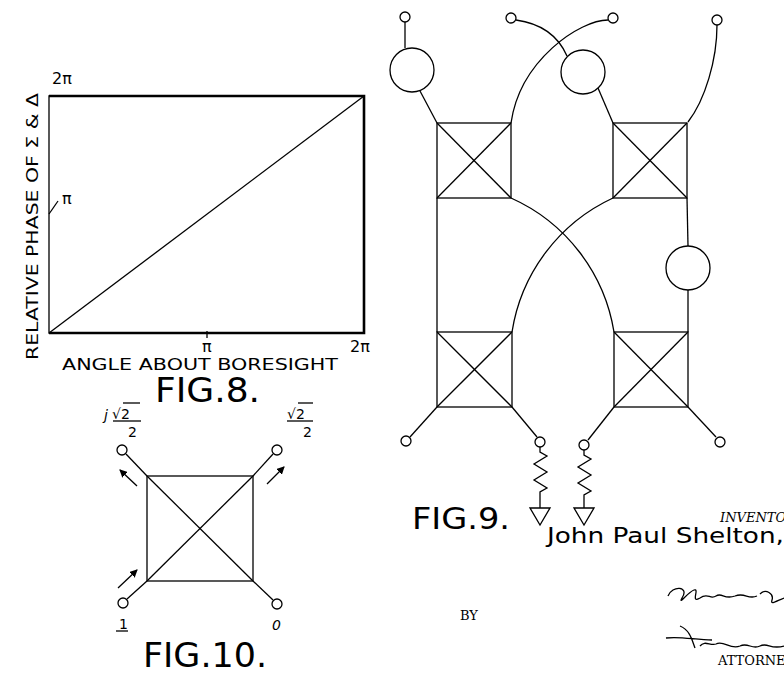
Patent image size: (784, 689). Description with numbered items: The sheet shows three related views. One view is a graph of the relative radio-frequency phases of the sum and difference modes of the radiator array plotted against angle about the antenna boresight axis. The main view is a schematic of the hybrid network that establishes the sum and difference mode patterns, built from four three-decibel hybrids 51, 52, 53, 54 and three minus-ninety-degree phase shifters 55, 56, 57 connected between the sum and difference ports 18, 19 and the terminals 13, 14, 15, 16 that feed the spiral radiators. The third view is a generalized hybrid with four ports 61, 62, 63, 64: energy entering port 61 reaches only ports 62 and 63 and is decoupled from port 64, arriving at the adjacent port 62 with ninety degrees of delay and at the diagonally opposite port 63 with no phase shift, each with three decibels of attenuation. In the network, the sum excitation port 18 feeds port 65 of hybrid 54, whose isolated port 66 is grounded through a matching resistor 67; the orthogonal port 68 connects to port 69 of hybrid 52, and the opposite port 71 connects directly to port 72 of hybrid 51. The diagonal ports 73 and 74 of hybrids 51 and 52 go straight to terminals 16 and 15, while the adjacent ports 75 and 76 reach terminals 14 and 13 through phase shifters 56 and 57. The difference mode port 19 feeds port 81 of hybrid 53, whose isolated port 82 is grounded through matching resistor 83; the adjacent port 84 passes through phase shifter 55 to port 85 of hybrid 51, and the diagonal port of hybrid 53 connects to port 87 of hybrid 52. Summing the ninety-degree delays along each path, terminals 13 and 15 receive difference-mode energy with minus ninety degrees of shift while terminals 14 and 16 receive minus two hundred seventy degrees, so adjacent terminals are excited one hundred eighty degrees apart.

In FIG. 9, the port 13 is at (400, 17).
In FIG. 9, the port 14 is at (506, 18).
In FIG. 9, the terminal 15 is at (619, 18).
In FIG. 9, the terminal 16 is at (723, 19).
In FIG. 9, the sum excitation port 18 is at (413, 446).
In FIG. 9, the difference mode port 19 is at (716, 446).
In FIG. 9, the 3 db hybrid 51 is at (680, 150).
In FIG. 9, the 3 db hybrid 52 is at (507, 160).
In FIG. 9, the 3 db hybrid 53 is at (690, 368).
In FIG. 9, the 3 db hybrid 54 is at (504, 373).
In FIG. 9, the —90° phase shifter 55 is at (710, 266).
In FIG. 9, the —90° phase shifter 56 is at (605, 65).
In FIG. 9, the —90° phase shifter 57 is at (434, 66).
In FIG. 10, the port 61 is at (118, 604).
In FIG. 10, the port 62 is at (117, 450).
In FIG. 10, the port 63 is at (283, 450).
In FIG. 10, the port 64 is at (283, 601).
In FIG. 9, the port 65 is at (436, 406).
In FIG. 9, the port 66 is at (511, 409).
In FIG. 9, the matching resistor 67 is at (535, 484).
In FIG. 9, the port 68 is at (440, 331).
In FIG. 9, the port 69 is at (440, 200).
In FIG. 9, the port 71 is at (514, 331).
In FIG. 9, the port 72 is at (614, 200).
In FIG. 9, the diagonal port 73 is at (687, 122).
In FIG. 9, the diagonal port 74 is at (510, 122).
In FIG. 9, the adjacent port 75 is at (615, 122).
In FIG. 9, the adjacent port 76 is at (440, 122).
In FIG. 9, the port 81 is at (690, 405).
In FIG. 9, the port 82 is at (614, 407).
In FIG. 9, the matching resistor 83 is at (592, 480).
In FIG. 9, the port 84 is at (688, 332).
In FIG. 9, the port 85 is at (688, 199).
In FIG. 9, the port 87 is at (511, 200).